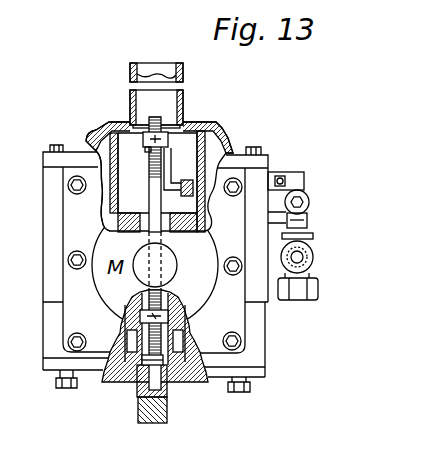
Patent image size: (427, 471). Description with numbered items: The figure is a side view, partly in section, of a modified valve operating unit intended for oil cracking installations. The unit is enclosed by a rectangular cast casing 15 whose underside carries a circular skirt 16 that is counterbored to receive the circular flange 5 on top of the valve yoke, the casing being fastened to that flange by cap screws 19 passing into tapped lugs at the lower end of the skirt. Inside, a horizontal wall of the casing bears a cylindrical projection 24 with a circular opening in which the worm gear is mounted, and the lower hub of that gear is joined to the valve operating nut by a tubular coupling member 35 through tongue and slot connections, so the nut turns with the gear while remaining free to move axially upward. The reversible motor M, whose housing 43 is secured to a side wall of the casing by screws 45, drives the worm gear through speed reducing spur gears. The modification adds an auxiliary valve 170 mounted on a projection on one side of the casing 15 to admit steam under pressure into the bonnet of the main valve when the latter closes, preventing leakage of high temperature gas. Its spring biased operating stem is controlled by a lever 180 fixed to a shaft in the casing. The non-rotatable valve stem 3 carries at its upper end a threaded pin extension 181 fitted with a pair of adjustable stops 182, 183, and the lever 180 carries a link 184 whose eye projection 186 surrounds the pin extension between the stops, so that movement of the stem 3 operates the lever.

The valve stem 3 is at (167, 422).
The circular flange 5 is at (50, 371).
The enclosing casing 15 is at (48, 186).
The circular skirt 16 is at (43, 338).
The cap screws 19 is at (64, 389).
The cylindrical projection 24 is at (106, 200).
The tubular coupling member 35 is at (139, 318).
The motor housing 43 is at (66, 283).
The screws 45 is at (68, 260).
The auxiliary valve 170 is at (316, 256).
The lever 180 is at (203, 208).
The threaded pin extension 181 is at (150, 199).
The adjustable stop 182 is at (167, 128).
The adjustable stop 183 is at (184, 318).
The link 184 is at (176, 158).
The eye projection 186 is at (148, 153).